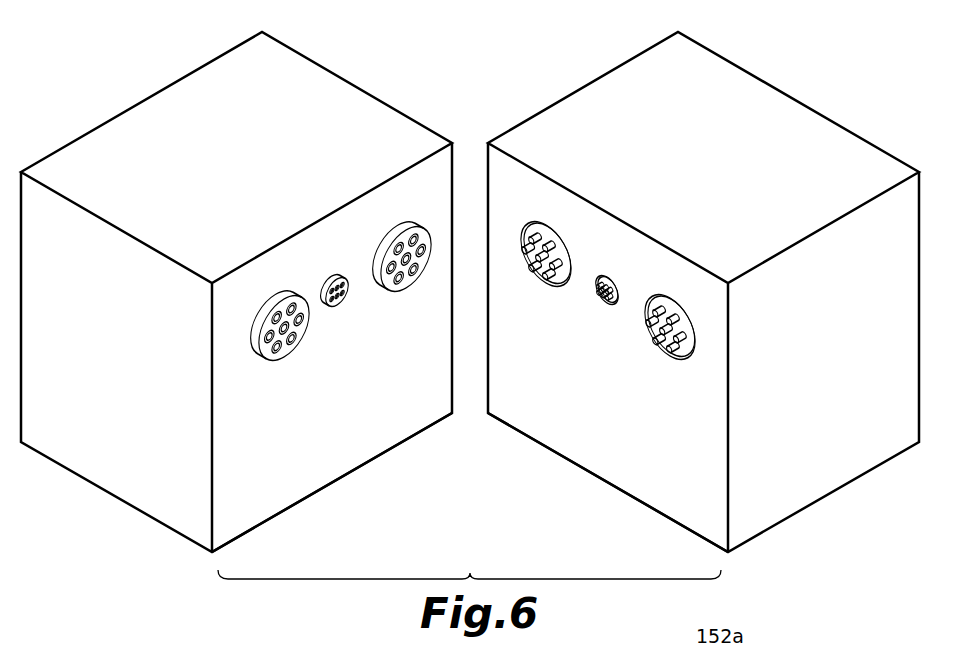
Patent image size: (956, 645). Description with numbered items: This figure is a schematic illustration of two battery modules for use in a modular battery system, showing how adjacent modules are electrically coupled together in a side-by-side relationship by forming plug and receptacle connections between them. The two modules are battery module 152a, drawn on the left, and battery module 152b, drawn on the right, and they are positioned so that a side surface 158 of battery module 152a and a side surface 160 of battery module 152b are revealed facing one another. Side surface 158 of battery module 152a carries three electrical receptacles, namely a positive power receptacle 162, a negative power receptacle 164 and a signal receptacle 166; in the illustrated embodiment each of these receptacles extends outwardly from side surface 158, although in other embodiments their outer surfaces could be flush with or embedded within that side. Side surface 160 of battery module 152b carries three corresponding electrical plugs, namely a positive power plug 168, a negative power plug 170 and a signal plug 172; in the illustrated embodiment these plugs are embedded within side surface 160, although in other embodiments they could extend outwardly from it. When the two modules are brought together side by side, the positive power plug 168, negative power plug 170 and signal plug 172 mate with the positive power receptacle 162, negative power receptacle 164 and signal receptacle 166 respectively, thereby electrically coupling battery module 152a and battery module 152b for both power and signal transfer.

The battery module 152a is at (357, 113).
The battery module 152b is at (583, 113).
The side surface 158 is at (285, 480).
The side surface 160 is at (653, 480).
The positive power receptacle 162 is at (293, 343).
The negative power receptacle 164 is at (417, 275).
The signal receptacle 166 is at (348, 298).
The positive power plug 168 is at (653, 333).
The negative power plug 170 is at (525, 262).
The signal plug 172 is at (595, 297).